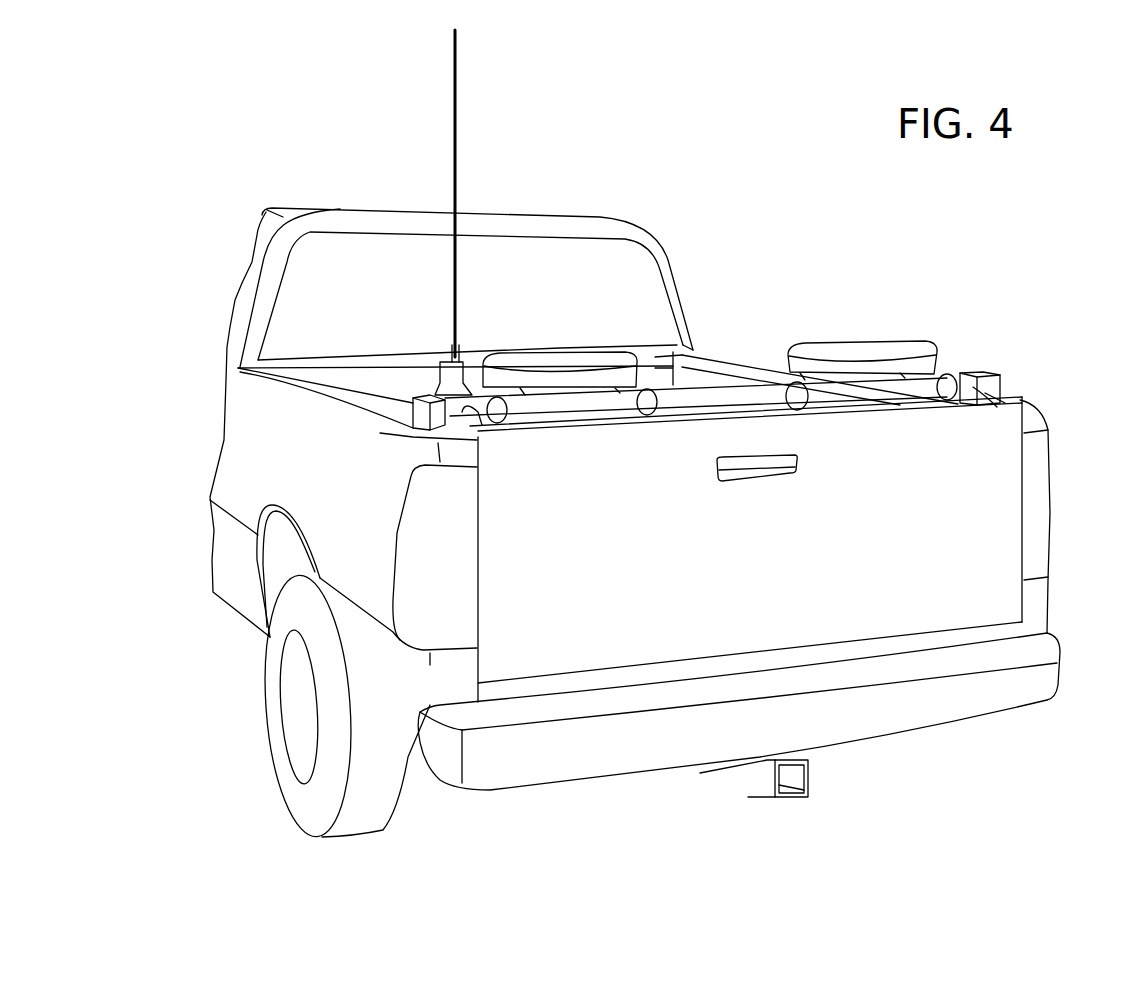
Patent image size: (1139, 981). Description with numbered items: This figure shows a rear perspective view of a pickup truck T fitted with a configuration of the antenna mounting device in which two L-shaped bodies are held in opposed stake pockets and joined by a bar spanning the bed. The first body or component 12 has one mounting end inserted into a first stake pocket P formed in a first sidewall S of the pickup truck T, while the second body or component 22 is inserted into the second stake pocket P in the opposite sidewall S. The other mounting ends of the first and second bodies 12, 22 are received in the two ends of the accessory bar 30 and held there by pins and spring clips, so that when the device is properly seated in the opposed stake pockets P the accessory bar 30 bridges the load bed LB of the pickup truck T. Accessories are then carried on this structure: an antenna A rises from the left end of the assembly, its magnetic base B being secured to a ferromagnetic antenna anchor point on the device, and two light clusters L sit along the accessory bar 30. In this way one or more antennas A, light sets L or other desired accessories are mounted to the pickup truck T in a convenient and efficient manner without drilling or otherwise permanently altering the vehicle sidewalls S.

The antenna A is at (457, 152).
The pickup truck T is at (628, 218).
The magnetic base B is at (440, 390).
The light cluster L is at (556, 352).
The load bed LB is at (688, 378).
The sidewall S is at (739, 355).
The accessory bar 30 is at (742, 395).
The first body or component 12 is at (997, 377).
The stake pocket P is at (1003, 402).
The second body or component 22 is at (413, 400).